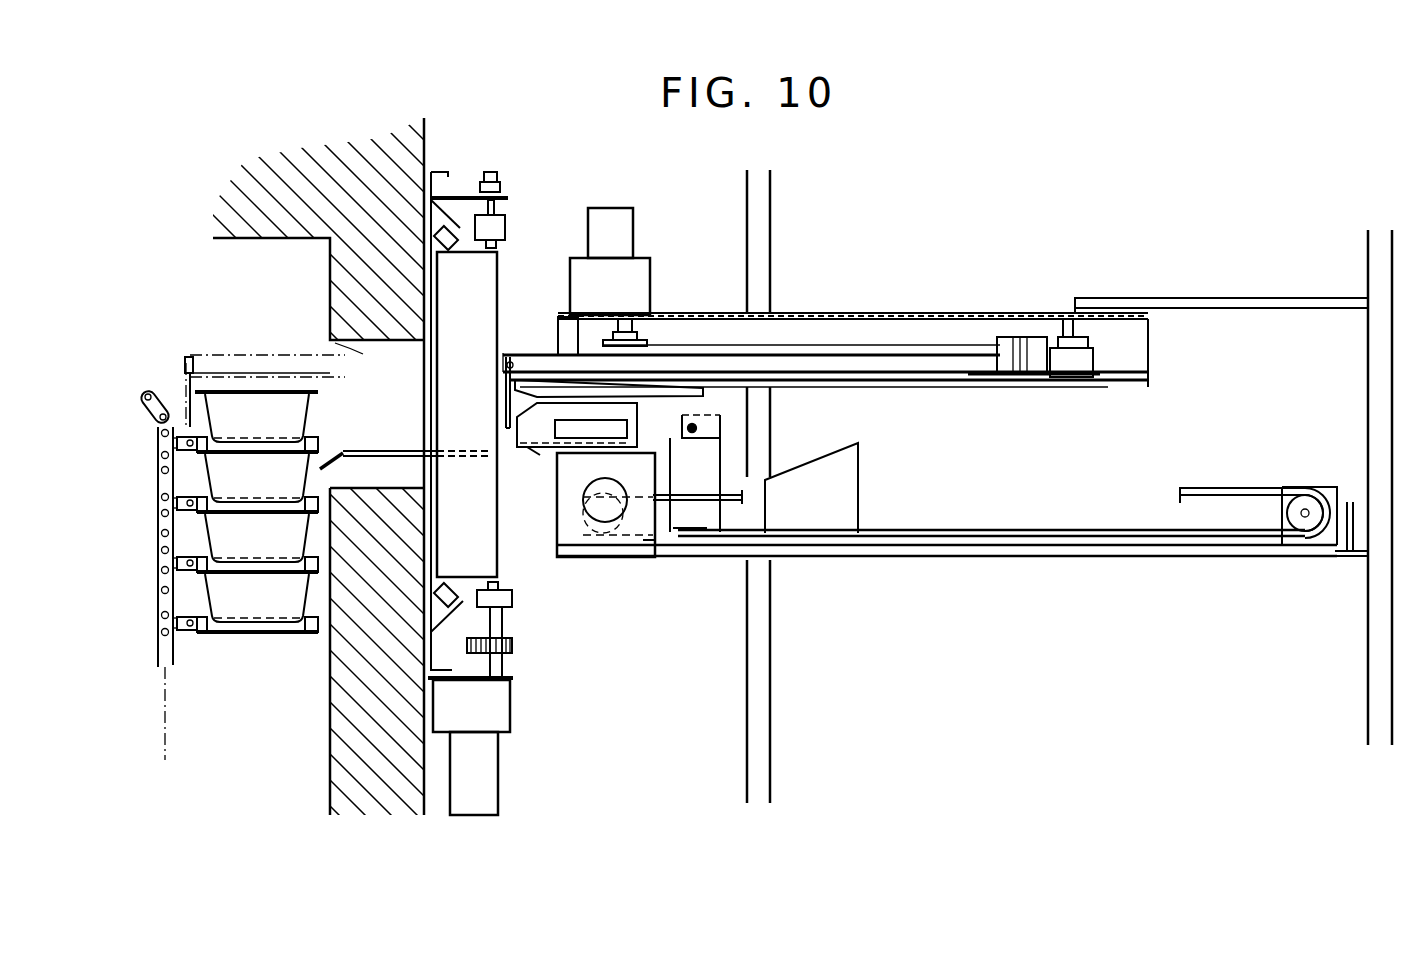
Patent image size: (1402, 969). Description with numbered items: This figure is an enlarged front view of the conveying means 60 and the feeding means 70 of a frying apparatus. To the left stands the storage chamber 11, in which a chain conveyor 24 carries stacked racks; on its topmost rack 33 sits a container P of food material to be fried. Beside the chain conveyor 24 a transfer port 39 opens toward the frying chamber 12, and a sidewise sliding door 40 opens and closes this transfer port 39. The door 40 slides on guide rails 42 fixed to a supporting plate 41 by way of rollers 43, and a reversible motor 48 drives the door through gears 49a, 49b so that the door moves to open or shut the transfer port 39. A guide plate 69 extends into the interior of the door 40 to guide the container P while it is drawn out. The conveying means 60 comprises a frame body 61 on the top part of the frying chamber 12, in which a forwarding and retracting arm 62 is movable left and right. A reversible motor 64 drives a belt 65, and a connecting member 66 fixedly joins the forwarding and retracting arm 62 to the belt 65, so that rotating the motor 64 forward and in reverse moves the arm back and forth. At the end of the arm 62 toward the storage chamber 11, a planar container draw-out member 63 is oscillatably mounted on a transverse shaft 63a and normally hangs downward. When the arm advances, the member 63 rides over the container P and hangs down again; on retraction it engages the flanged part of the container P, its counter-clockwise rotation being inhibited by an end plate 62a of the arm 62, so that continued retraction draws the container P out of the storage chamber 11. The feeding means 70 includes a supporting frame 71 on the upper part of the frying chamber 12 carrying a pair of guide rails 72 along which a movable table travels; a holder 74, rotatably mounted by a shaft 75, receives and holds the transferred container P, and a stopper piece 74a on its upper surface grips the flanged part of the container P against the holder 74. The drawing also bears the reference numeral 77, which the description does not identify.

The storage chamber 11 is at (245, 247).
The frying chamber 12 is at (782, 712).
The chain conveyor 24 is at (150, 530).
The topmost rack 33 is at (258, 634).
The transfer port 39 is at (328, 340).
The door 40 is at (487, 505).
The supporting plate 41 is at (437, 170).
The guide rails 42 is at (490, 605).
The rollers 43 is at (437, 245).
The reversible motor 48 is at (488, 772).
The gear 49a is at (478, 680).
The gear 49b is at (512, 648).
The conveying means 60 is at (888, 314).
The frame body 61 is at (985, 312).
The forwarding and retracting arm 62 is at (277, 366).
The end plate 62a is at (188, 372).
The container draw-out member 63 is at (183, 413).
The transverse shaft 63a is at (197, 372).
The reversible motor 64 is at (623, 232).
The belt 65 is at (818, 345).
The connecting member 66 is at (1012, 372).
The guide plate 69 is at (378, 450).
The feeding means 70 is at (908, 558).
The supporting frame 71 is at (1207, 557).
The guide rails 72 is at (1045, 548).
The holder 74 is at (655, 410).
The stopper piece 74a is at (508, 352).
The shaft 75 is at (700, 428).
The wedge guide 77 is at (840, 490).
The container P is at (242, 405).